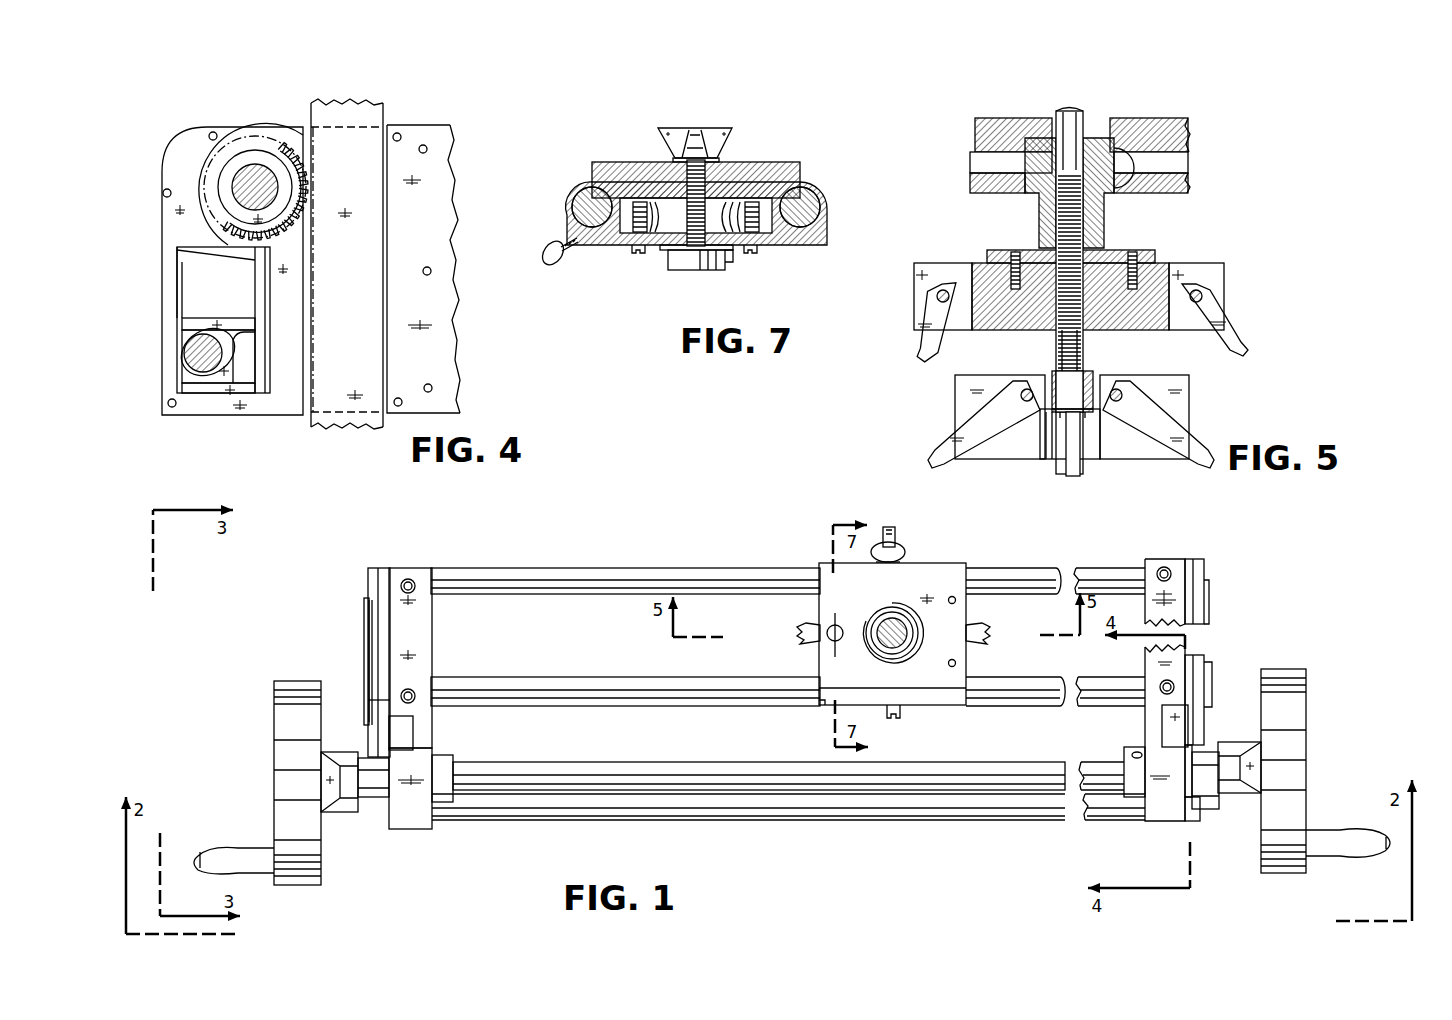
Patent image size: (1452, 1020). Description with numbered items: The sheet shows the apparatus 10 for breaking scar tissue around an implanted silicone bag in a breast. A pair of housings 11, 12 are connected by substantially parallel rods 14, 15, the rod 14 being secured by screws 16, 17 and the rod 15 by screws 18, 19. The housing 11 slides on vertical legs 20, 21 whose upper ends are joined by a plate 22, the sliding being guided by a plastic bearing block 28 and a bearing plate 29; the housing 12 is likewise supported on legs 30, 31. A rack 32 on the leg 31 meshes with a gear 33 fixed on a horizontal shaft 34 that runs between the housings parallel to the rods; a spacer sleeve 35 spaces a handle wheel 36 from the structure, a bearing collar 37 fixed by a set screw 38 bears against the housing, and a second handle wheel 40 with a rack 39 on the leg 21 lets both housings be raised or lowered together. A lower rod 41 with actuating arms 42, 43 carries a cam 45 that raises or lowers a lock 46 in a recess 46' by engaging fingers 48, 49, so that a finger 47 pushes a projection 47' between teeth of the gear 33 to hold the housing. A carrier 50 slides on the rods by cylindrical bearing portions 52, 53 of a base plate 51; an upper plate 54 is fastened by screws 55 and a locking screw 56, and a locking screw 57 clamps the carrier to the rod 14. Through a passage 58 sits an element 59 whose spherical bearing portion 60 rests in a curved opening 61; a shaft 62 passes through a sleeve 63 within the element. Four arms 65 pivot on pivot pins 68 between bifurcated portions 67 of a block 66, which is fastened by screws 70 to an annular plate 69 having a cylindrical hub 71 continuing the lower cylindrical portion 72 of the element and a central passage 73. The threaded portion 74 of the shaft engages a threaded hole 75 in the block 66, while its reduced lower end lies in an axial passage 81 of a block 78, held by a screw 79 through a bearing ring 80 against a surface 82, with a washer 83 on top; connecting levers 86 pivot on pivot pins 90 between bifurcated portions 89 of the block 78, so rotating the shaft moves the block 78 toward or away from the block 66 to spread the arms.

In FIG. 1, the apparatus 10 is at (993, 540).
In FIG. 1, the housing 11 is at (405, 568).
In FIG. 4, the housing 12 is at (436, 124).
In FIG. 1, the housing 12 is at (1158, 559).
In FIG. 7, the rod 14 is at (586, 242).
In FIG. 1, the rod 14 is at (700, 568).
In FIG. 7, the rod 15 is at (806, 240).
In FIG. 1, the rod 15 is at (620, 706).
In FIG. 1, the screw 16 is at (412, 581).
In FIG. 1, the screw 17 is at (1158, 571).
In FIG. 1, the screw 18 is at (415, 695).
In FIG. 1, the screw 19 is at (1162, 684).
In FIG. 1, the leg 20 is at (378, 568).
In FIG. 1, the leg 21 is at (381, 700).
In FIG. 1, the plate 22 is at (366, 650).
In FIG. 1, the bearing block 28 is at (366, 633).
In FIG. 1, the bearing plate 29 is at (364, 610).
In FIG. 1, the leg 30 is at (1196, 559).
In FIG. 1, the leg 31 is at (1198, 700).
In FIG. 4, the rack 32 is at (383, 108).
In FIG. 1, the rack 32 is at (1162, 718).
In FIG. 4, the gear 33 is at (228, 242).
In FIG. 4, the shaft 34 is at (246, 194).
In FIG. 1, the shaft 34 is at (575, 791).
In FIG. 1, the spacer sleeve 35 is at (1250, 794).
In FIG. 1, the handle wheel 36 is at (1306, 742).
In FIG. 1, the bearing collar 37 is at (1130, 749).
In FIG. 1, the set screw 38 is at (1130, 755).
In FIG. 1, the rack 39 is at (413, 735).
In FIG. 1, the handle wheel 40 is at (274, 720).
In FIG. 4, the rod 41 is at (190, 350).
In FIG. 1, the rod 41 is at (790, 821).
In FIG. 1, the actuating arm 42 is at (358, 811).
In FIG. 1, the actuating arm 43 is at (1200, 810).
In FIG. 4, the cam 45 is at (236, 382).
In FIG. 4, the lock 46 is at (244, 347).
In FIG. 4, the recess 46' is at (145, 282).
In FIG. 4, the finger 47 is at (218, 306).
In FIG. 4, the projection 47' is at (182, 262).
In FIG. 4, the finger 48 is at (240, 334).
In FIG. 4, the finger 49 is at (200, 388).
In FIG. 7, the carrier 50 is at (736, 158).
In FIG. 5, the carrier 50 is at (1138, 118).
In FIG. 1, the carrier 50 is at (971, 651).
In FIG. 7, the base plate 51 is at (770, 246).
In FIG. 5, the base plate 51 is at (1170, 193).
In FIG. 7, the cylindrical bearing portion 52 is at (580, 193).
In FIG. 1, the cylindrical bearing portion 52 is at (853, 563).
In FIG. 7, the cylindrical bearing portion 53 is at (815, 193).
In FIG. 1, the cylindrical bearing portion 53 is at (860, 706).
In FIG. 7, the upper plate 54 is at (782, 162).
In FIG. 5, the upper plate 54 is at (1175, 118).
In FIG. 1, the upper plate 54 is at (819, 598).
In FIG. 7, the screw 55 is at (634, 253).
In FIG. 1, the screw 55 is at (956, 600).
In FIG. 7, the locking screw 56 is at (701, 128).
In FIG. 1, the locking screw 56 is at (797, 632).
In FIG. 7, the locking screw 57 is at (552, 266).
In FIG. 1, the locking screw 57 is at (900, 547).
In FIG. 5, the passage 58 is at (1095, 138).
In FIG. 1, the passage 58 is at (876, 616).
In FIG. 7, the element 59 is at (684, 272).
In FIG. 5, the element 59 is at (1010, 161).
In FIG. 7, the spherical bearing portion 60 is at (662, 251).
In FIG. 5, the spherical bearing portion 60 is at (992, 194).
In FIG. 5, the opening 61 is at (1112, 182).
In FIG. 7, the shaft 62 is at (696, 203).
In FIG. 5, the shaft 62 is at (1072, 111).
In FIG. 1, the shaft 62 is at (897, 618).
In FIG. 5, the sleeve 63 is at (1052, 118).
In FIG. 1, the sleeve 63 is at (908, 650).
In FIG. 5, the arm 65 is at (896, 318).
In FIG. 1, the arm 65 is at (797, 640).
In FIG. 5, the block 66 is at (920, 264).
In FIG. 5, the bifurcated portion 67 is at (1210, 264).
In FIG. 5, the pivot pin 68 is at (936, 294).
In FIG. 5, the annular plate 69 is at (1157, 254).
In FIG. 5, the screw 70 is at (1163, 250).
In FIG. 5, the cylindrical hub 71 is at (1105, 240).
In FIG. 7, the lower cylindrical portion 72 is at (727, 264).
In FIG. 5, the lower cylindrical portion 72 is at (1030, 216).
In FIG. 5, the central passage 73 is at (1038, 240).
In FIG. 5, the threaded portion 74 is at (1061, 344).
In FIG. 5, the threaded hole 75 is at (1078, 344).
In FIG. 5, the block 78 is at (1000, 460).
In FIG. 5, the screw 79 is at (1082, 470).
In FIG. 5, the bearing ring 80 is at (1094, 416).
In FIG. 5, the axial passage 81 is at (1050, 378).
In FIG. 5, the surface 82 is at (1050, 452).
In FIG. 5, the washer 83 is at (1092, 380).
In FIG. 5, the connecting lever 86 is at (946, 430).
In FIG. 5, the bifurcated portion 89 is at (955, 382).
In FIG. 5, the pivot pin 90 is at (1024, 392).